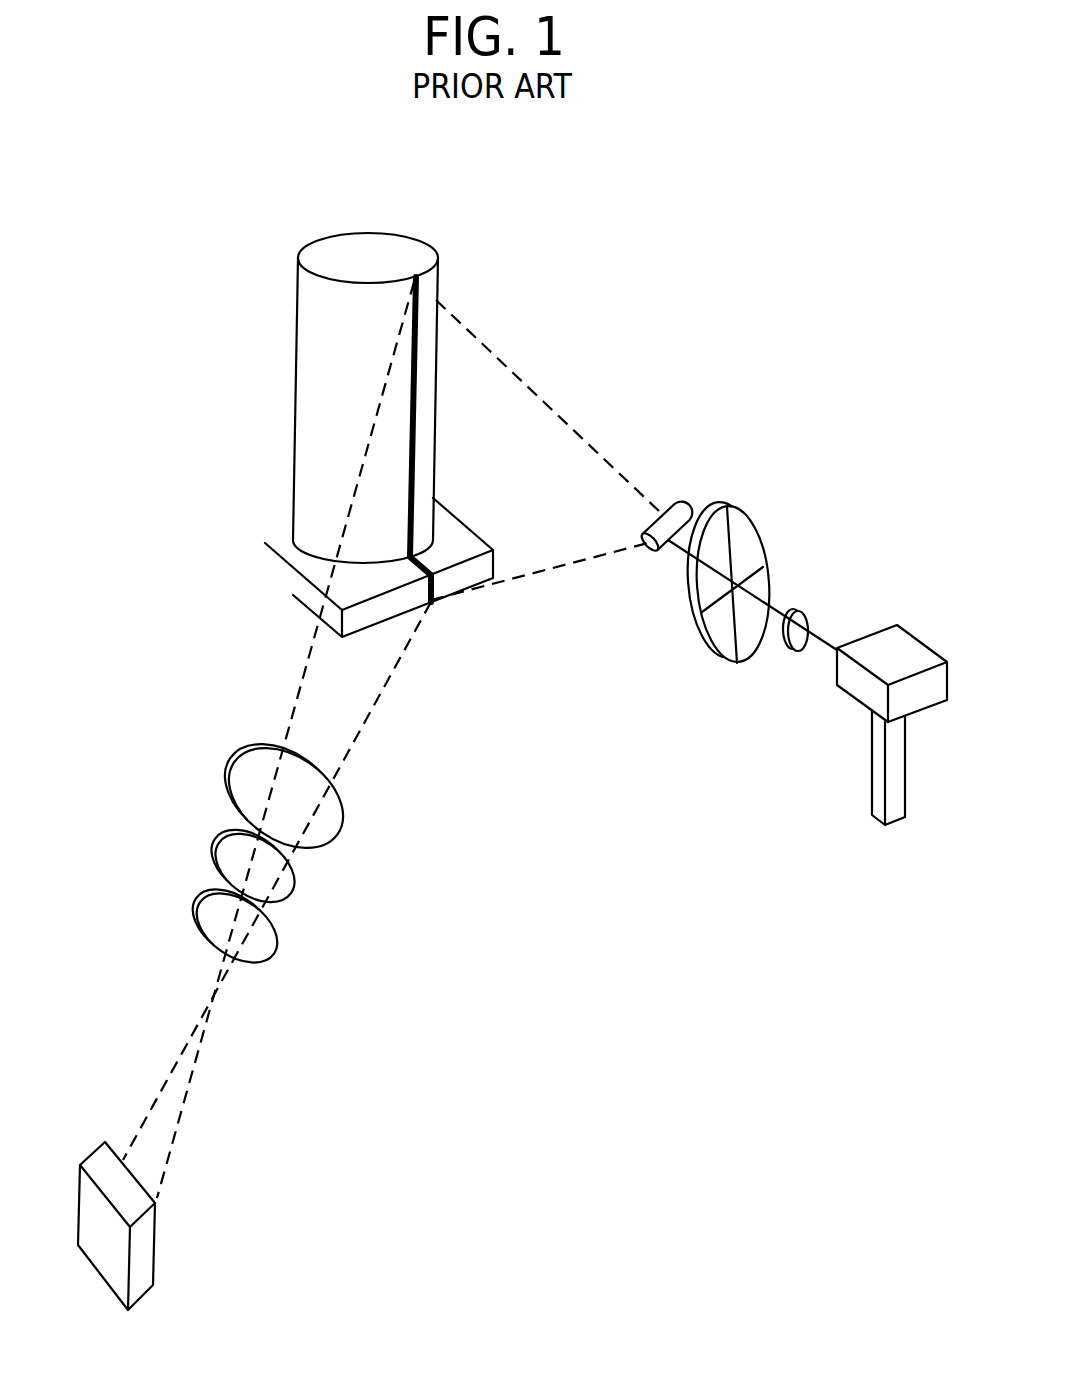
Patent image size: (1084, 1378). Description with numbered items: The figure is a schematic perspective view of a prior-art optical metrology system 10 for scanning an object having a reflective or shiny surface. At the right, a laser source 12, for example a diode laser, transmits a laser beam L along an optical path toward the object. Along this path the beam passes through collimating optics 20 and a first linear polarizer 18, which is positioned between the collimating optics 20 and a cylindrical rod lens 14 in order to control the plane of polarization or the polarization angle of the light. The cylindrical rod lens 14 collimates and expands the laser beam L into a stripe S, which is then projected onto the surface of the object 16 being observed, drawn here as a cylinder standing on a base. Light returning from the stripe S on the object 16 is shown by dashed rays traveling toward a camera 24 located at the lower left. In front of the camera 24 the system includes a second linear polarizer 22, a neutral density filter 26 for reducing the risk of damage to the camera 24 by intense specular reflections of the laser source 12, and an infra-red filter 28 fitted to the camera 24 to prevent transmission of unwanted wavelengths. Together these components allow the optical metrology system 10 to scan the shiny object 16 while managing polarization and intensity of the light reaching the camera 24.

The optical metrology system 10 is at (172, 308).
The laser source 12 is at (858, 690).
The cylindrical rod lens 14 is at (650, 550).
The object 16 is at (307, 400).
The first linear polarizer 18 is at (707, 664).
The collimating optics 20 is at (808, 614).
The second linear polarizer 22 is at (340, 803).
The camera 24 is at (147, 1233).
The neutral density filter 26 is at (237, 828).
The infra-red filter 28 is at (213, 893).
The stripe S is at (418, 302).
The laser beam L is at (820, 650).